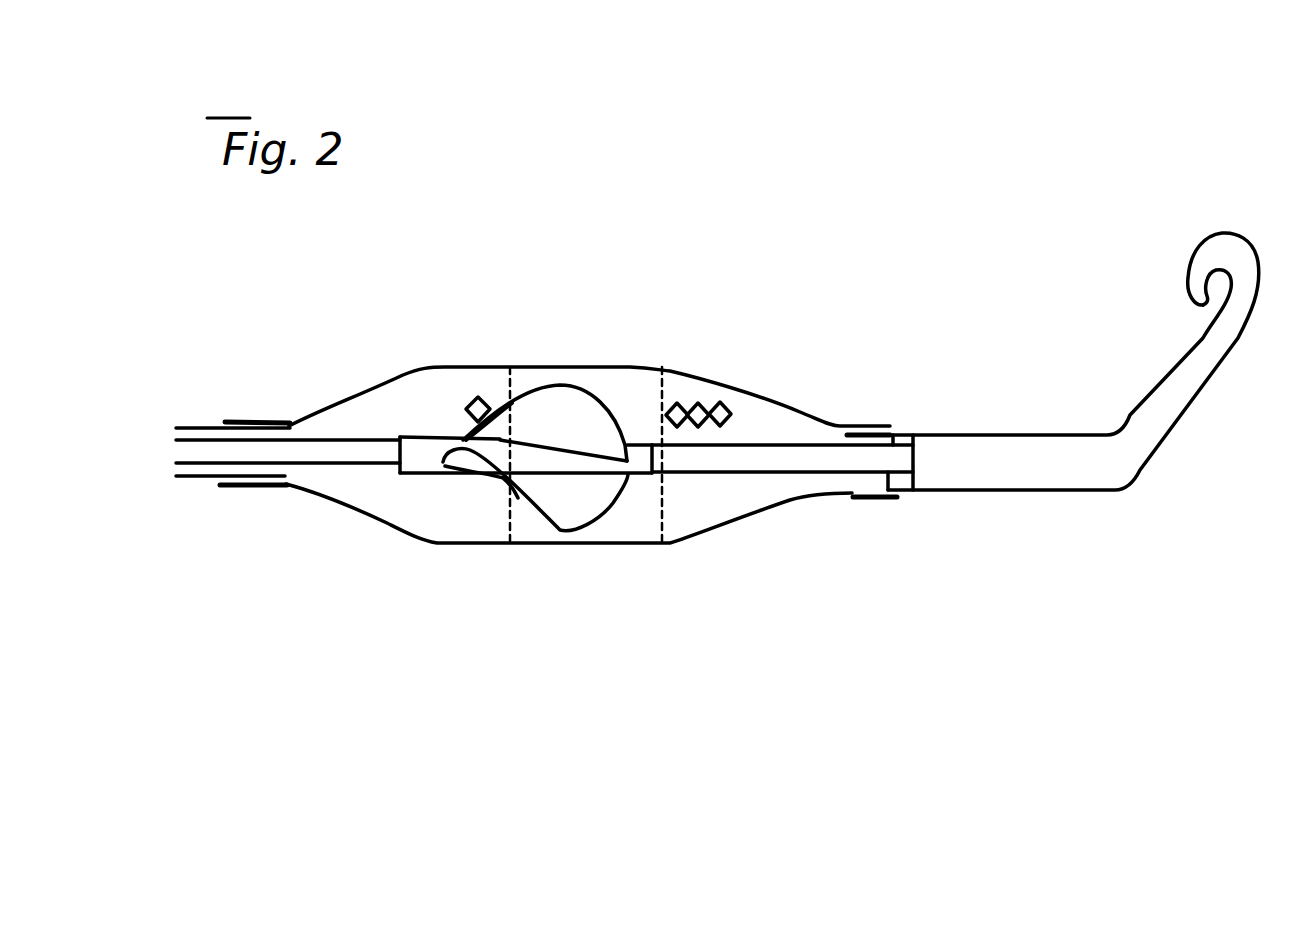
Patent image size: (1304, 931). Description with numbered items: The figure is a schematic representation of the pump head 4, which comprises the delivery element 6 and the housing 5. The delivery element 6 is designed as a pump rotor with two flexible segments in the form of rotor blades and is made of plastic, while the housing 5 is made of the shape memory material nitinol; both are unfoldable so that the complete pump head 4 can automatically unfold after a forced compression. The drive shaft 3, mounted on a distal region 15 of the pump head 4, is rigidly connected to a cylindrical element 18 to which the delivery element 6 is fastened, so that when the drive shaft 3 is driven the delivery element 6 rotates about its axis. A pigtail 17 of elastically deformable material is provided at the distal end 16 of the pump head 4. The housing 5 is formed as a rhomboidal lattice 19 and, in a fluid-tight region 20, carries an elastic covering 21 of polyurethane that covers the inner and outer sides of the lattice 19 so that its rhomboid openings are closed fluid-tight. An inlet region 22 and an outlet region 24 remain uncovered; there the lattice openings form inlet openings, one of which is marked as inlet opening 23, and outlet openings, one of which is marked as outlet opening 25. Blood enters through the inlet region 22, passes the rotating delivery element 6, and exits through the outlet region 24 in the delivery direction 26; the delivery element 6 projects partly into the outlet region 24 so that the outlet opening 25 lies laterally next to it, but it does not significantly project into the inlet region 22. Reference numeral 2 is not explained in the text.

The catheter 2 is at (195, 472).
The drive shaft 3 is at (317, 461).
The pump head 4 is at (866, 98).
The housing 5 is at (688, 370).
The delivery element 6 is at (593, 400).
The distal region 15 is at (851, 561).
The distal end 16 is at (996, 313).
The pigtail 17 is at (1050, 478).
The cylindrical element 18 is at (422, 461).
The rhomboidal lattice 19 is at (700, 403).
The fluid-tight region 20 is at (570, 604).
The elastic covering 21 is at (621, 532).
The inlet region 22 is at (731, 583).
The inlet opening 23 is at (722, 402).
The outlet region 24 is at (438, 604).
The outlet opening 25 is at (473, 396).
The delivery direction 26 is at (693, 160).